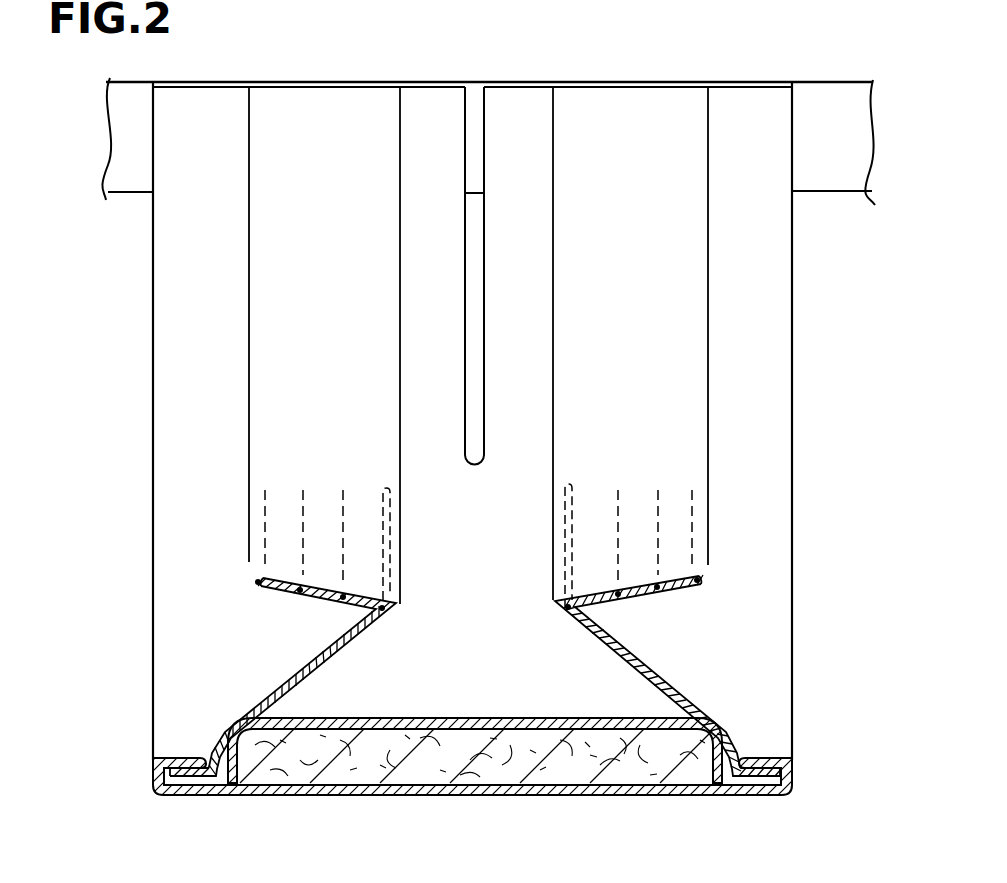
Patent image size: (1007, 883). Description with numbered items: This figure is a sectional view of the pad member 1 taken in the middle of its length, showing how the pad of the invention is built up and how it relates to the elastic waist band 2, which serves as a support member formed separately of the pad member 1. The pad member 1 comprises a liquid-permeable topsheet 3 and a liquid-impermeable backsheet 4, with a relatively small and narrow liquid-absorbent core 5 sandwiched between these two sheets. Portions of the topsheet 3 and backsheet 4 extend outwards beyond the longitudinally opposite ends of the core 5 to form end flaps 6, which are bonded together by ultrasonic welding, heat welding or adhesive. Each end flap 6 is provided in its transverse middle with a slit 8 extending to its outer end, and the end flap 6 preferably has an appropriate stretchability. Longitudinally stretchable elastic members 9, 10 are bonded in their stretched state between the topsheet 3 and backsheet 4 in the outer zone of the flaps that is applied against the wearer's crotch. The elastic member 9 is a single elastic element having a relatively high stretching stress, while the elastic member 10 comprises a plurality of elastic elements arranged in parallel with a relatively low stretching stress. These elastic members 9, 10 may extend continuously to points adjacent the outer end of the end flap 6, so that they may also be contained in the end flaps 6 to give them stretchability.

The pad member 1 is at (143, 467).
The elastic waist band 2 is at (626, 82).
The liquid-permeable topsheet 3 is at (452, 718).
The liquid-impermeable backsheet 4 is at (527, 790).
The liquid-absorbent core 5 is at (415, 772).
The end flap 6 is at (170, 334).
The slit 8 is at (479, 350).
The elastic member 9 is at (392, 604).
The elastic member 10 is at (292, 590).